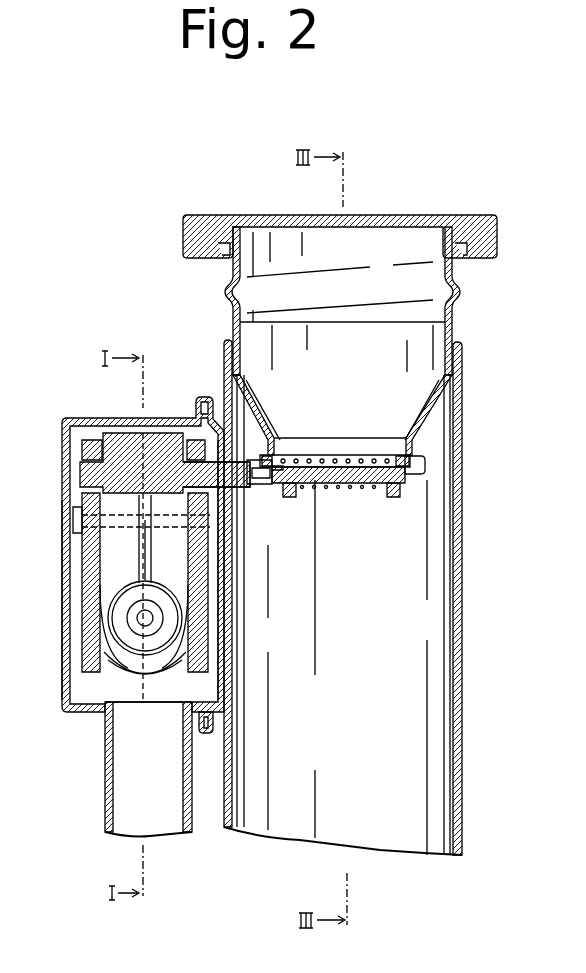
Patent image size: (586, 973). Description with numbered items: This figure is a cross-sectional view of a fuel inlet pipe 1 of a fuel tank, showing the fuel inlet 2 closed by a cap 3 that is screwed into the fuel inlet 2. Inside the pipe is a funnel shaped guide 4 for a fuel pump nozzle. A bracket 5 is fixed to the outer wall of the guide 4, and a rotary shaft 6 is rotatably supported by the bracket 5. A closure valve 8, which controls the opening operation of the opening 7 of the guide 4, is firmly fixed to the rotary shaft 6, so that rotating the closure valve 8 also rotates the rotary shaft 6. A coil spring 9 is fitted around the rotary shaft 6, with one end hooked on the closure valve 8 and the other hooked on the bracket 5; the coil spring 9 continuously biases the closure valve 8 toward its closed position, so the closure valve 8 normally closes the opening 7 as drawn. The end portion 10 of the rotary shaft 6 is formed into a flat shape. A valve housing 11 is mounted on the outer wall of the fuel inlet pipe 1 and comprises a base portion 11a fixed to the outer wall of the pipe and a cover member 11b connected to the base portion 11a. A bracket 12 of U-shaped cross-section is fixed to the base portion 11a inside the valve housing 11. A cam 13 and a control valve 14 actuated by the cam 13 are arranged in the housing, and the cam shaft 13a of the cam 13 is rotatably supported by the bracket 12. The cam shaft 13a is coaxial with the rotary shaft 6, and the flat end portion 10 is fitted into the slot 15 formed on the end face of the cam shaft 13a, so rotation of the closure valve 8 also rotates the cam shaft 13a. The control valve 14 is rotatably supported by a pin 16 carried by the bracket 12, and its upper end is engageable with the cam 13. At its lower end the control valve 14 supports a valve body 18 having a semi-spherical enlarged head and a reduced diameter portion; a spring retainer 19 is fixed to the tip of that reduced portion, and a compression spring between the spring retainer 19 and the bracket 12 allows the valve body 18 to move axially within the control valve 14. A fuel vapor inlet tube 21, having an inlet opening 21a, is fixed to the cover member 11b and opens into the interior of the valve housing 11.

The fuel inlet pipe 1 is at (463, 532).
The fuel inlet 2 is at (388, 343).
The cap 3 is at (388, 215).
The funnel shaped guide 4 is at (416, 412).
The bracket 5 is at (290, 497).
The rotary shaft 6 is at (335, 492).
The opening 7 is at (313, 455).
The closure valve 8 is at (346, 455).
The coil spring 9 is at (361, 490).
The end portion 10 is at (271, 492).
The valve housing 11 is at (61, 428).
The base portion 11a is at (226, 647).
The cover member 11b is at (34, 600).
The bracket 12 is at (88, 570).
The cam 13 is at (130, 438).
The cam shaft 13a is at (193, 438).
The control valve 14 is at (122, 545).
The slot 15 is at (284, 456).
The pin 16 is at (72, 520).
The valve body 18 is at (107, 653).
The spring retainer 19 is at (133, 662).
The fuel vapor inlet tube 21 is at (105, 782).
The inlet opening 21a is at (143, 710).